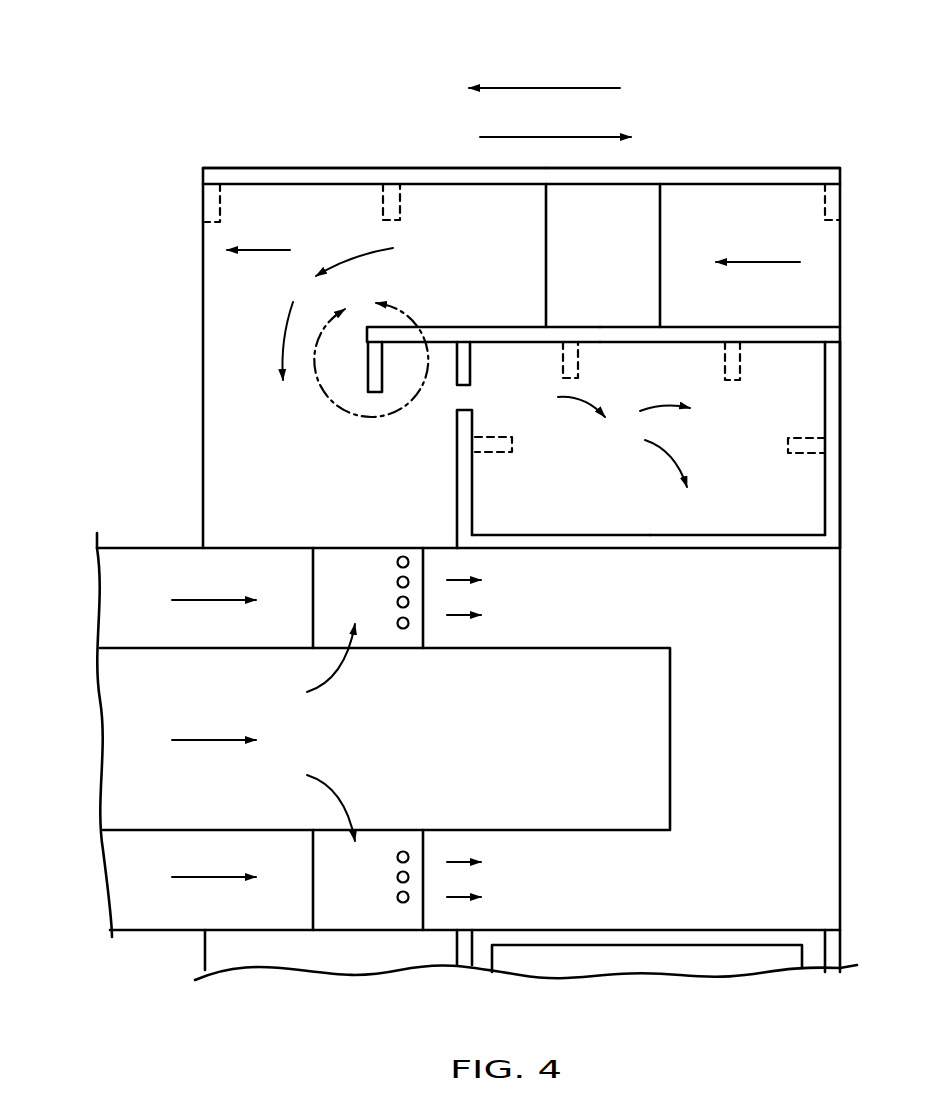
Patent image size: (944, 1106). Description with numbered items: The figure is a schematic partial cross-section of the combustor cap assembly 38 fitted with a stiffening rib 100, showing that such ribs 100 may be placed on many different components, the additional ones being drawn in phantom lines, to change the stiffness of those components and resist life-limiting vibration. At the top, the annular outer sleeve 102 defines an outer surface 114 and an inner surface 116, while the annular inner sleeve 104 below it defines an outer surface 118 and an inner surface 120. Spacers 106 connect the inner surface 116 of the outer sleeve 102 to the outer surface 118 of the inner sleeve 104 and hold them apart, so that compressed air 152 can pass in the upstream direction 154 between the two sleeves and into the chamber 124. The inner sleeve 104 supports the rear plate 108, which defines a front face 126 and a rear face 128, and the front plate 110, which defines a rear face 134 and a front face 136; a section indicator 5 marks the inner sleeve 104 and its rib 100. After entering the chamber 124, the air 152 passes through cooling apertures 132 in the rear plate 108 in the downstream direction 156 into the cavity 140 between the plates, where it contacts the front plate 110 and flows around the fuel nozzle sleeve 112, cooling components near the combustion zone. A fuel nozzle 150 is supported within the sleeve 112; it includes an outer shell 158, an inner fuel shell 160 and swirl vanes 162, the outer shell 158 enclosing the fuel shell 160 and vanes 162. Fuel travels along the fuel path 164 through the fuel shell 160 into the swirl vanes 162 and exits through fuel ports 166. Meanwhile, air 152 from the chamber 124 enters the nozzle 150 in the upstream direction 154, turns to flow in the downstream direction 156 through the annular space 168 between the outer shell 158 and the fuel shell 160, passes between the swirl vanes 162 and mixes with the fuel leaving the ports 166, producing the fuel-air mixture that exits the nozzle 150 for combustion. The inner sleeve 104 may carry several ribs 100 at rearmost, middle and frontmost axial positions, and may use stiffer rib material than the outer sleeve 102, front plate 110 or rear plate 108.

The combustor cap assembly 38 is at (77, 253).
The outer sleeve 102 is at (694, 140).
The outer surface 114 is at (655, 168).
The inner surface 116 is at (251, 184).
The stiffening rib 100 is at (205, 200).
The spacers 106 is at (546, 255).
The outer surface 118 is at (492, 327).
The inner sleeve 104 is at (810, 327).
The inner surface 120 is at (488, 342).
The section view indicator 5 is at (371, 344).
The chamber 124 is at (257, 402).
The rear face 128 is at (457, 477).
The front face 126 is at (472, 508).
The fuel nozzle sleeve 112 is at (740, 533).
The rear face 134 is at (825, 400).
The front face 136 is at (840, 450).
The front plate 110 is at (857, 408).
The rear plate 108 is at (440, 503).
The cooling apertures 132 is at (463, 398).
The cavity 140 is at (637, 516).
The compressed air 152 is at (763, 262).
The upstream direction 154 is at (547, 88).
The downstream direction 156 is at (547, 137).
The outer shell 158 is at (152, 548).
The fuel nozzle 150 is at (75, 672).
The inner fuel shell 160 is at (143, 648).
The swirl vanes 162 is at (313, 600).
The fuel ports 166 is at (403, 629).
The annular space 168 is at (172, 587).
The fuel path 164 is at (172, 797).